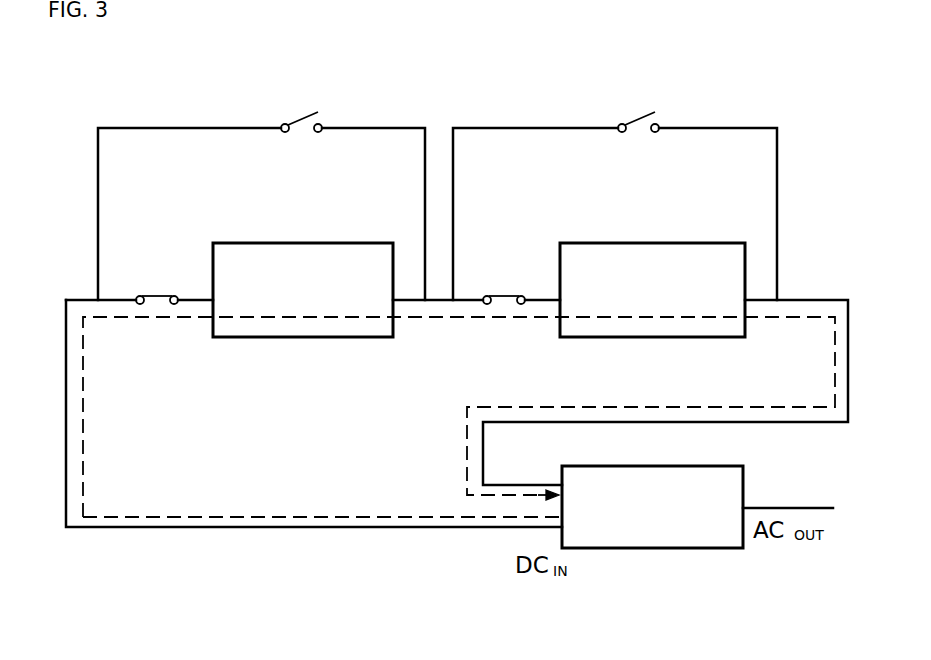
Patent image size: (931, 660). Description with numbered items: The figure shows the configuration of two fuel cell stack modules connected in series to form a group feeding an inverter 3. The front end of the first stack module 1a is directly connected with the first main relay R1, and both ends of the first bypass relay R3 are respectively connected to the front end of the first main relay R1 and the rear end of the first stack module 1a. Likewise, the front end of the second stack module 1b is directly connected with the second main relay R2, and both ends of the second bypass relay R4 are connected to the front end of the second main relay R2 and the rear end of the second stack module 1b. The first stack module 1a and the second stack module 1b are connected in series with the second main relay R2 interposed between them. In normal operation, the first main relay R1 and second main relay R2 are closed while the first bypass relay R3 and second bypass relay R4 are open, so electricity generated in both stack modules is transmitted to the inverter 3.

The first stack module 1a is at (263, 243).
The second stack module 1b is at (598, 243).
The inverter 3 is at (662, 548).
The first main relay R1 is at (157, 282).
The second main relay R2 is at (504, 282).
The first bypass relay R3 is at (301, 105).
The second bypass relay R4 is at (638, 105).